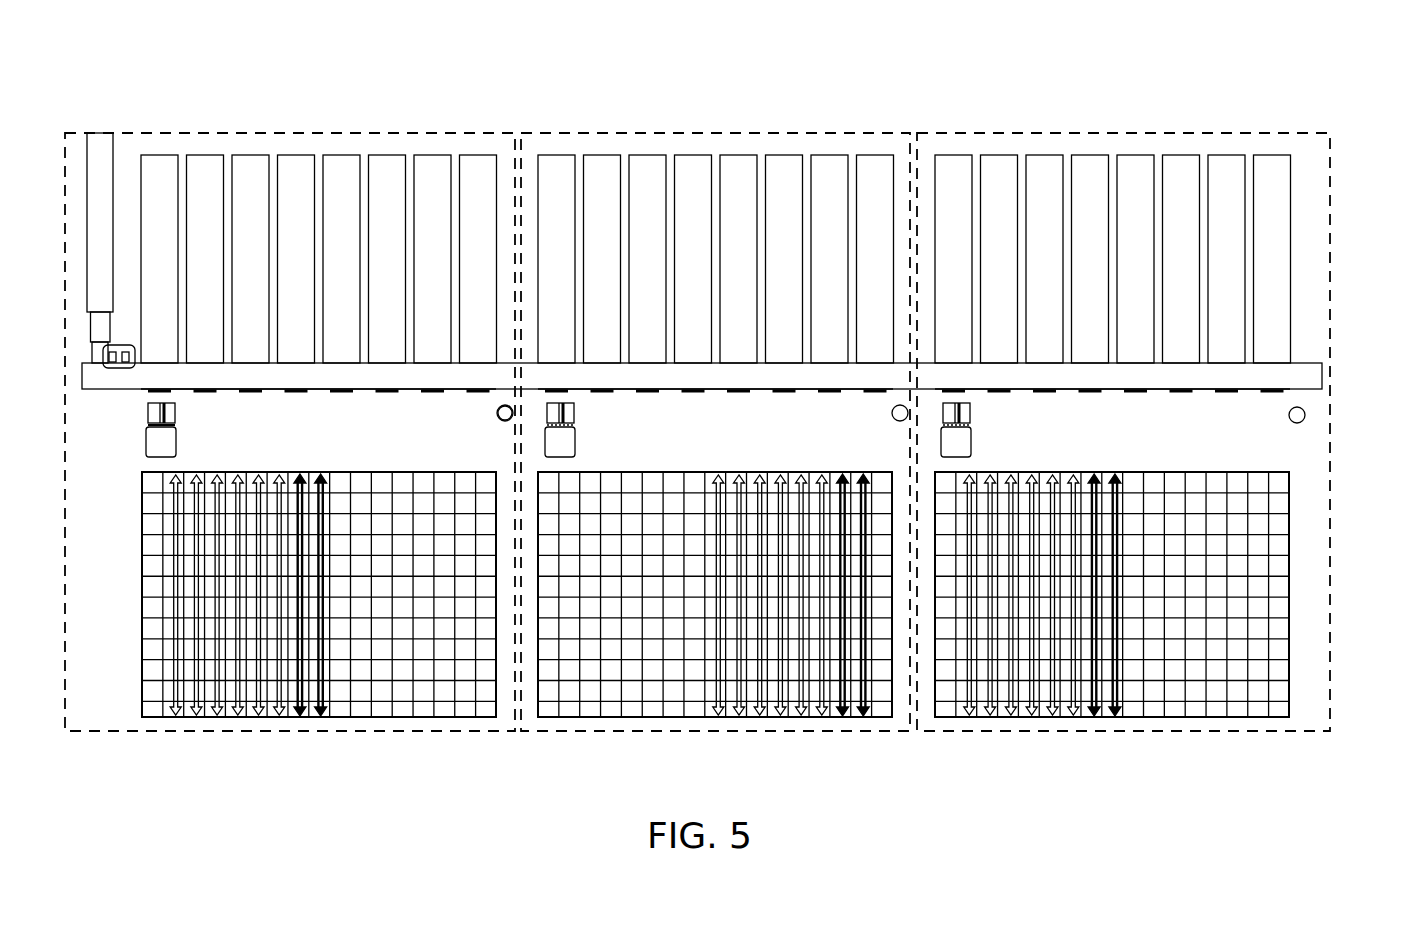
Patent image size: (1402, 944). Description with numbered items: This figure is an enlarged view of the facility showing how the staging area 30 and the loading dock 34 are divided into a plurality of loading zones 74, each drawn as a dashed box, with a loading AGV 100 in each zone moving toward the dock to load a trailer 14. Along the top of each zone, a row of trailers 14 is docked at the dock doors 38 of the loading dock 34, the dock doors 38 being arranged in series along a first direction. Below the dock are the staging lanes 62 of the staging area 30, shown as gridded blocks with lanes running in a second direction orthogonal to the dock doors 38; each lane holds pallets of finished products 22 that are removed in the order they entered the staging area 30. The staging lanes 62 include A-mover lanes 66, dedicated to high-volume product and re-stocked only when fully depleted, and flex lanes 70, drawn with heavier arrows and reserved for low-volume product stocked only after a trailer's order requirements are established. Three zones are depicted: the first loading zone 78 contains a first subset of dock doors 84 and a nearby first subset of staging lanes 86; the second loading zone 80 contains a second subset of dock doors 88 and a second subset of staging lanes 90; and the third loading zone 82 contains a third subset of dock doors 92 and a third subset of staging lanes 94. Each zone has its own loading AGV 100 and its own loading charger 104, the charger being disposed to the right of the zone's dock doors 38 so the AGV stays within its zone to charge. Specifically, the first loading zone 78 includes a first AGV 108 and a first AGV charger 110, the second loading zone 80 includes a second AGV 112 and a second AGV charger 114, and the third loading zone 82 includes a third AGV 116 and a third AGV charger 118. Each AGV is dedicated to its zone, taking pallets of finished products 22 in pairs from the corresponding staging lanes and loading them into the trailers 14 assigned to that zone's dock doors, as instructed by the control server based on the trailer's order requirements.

The trailer 14 is at (1273, 170).
The pallets of finished products 22 is at (559, 435).
The staging area 30 is at (1268, 545).
The loading dock 34 is at (757, 273).
The dock doors 38 is at (1268, 388).
The staging lanes 62 is at (968, 603).
The A-mover lanes 66 is at (968, 718).
The flex lanes 70 is at (1090, 718).
The loading zones 74 is at (672, 403).
The first loading zone 78 is at (65, 199).
The second loading zone 80 is at (716, 133).
The third loading zone 82 is at (1124, 133).
The first subset of dock doors 84 is at (297, 391).
The first subset of staging lanes 86 is at (173, 718).
The second subset of dock doors 88 is at (690, 391).
The second subset of staging lanes 90 is at (798, 718).
The third subset of dock doors 92 is at (1105, 391).
The third subset of staging lanes 94 is at (1006, 630).
The loading AGV 100 is at (175, 437).
The loading charger 104 is at (503, 421).
The first AGV 108 is at (148, 440).
The first AGV charger 110 is at (497, 413).
The second AGV 112 is at (573, 440).
The second AGV charger 114 is at (892, 414).
The third AGV 116 is at (970, 440).
The third AGV charger 118 is at (1305, 419).